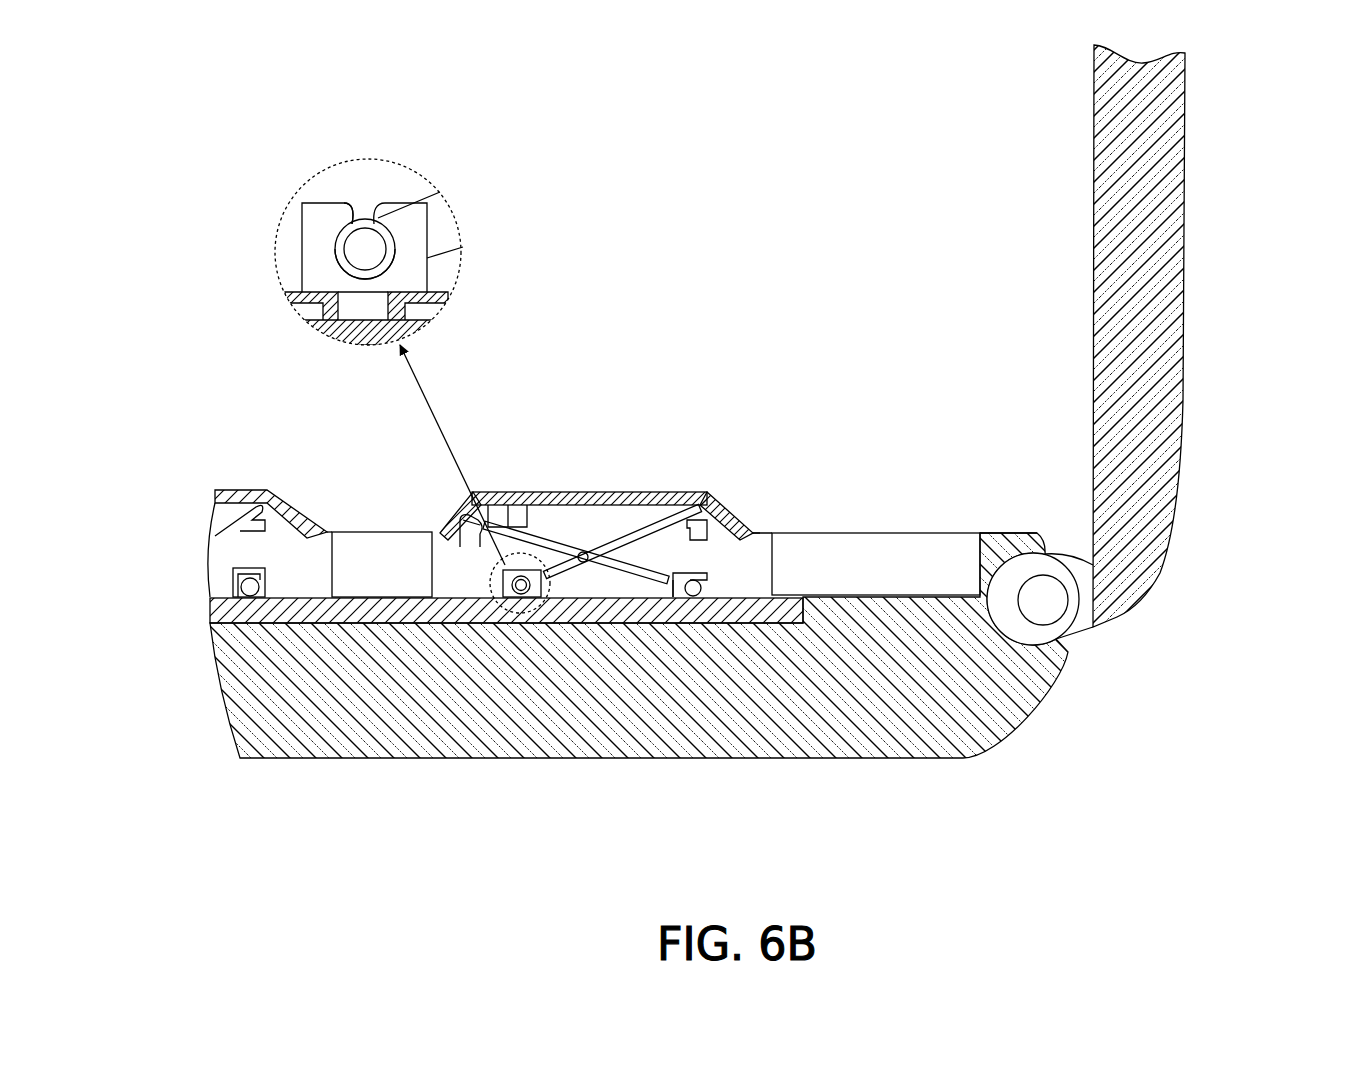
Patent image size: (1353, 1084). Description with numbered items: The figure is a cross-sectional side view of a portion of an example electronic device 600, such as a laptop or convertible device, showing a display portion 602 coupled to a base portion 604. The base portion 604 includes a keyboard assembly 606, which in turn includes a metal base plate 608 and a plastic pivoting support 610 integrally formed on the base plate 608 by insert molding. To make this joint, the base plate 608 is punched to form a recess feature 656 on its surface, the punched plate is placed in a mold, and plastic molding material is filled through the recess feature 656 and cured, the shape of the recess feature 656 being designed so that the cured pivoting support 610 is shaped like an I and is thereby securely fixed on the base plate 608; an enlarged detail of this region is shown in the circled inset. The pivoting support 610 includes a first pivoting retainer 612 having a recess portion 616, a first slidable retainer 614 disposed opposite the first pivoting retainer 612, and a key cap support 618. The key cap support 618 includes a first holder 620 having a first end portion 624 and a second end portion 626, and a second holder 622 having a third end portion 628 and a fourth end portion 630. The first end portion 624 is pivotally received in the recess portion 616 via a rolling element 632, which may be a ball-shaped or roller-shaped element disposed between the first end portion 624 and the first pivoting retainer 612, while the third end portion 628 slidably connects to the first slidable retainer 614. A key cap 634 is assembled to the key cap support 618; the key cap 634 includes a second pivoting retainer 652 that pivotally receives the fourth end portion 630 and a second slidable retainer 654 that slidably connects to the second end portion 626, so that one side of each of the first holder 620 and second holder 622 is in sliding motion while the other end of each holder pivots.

The electronic device 600 is at (907, 858).
The display portion 602 is at (1185, 382).
The base portion 604 is at (940, 758).
The keyboard assembly 606 is at (905, 533).
The base plate 608 is at (210, 612).
The pivoting support 610 is at (449, 531).
The first pivoting retainer 612 is at (543, 598).
The first slidable retainer 614 is at (683, 598).
The recess portion 616 is at (360, 198).
The key cap support 618 is at (573, 447).
The first holder 620 is at (633, 492).
The second holder 622 is at (495, 474).
The first end portion 624 is at (355, 250).
The second end portion 626 is at (707, 503).
The third end portion 628 is at (707, 600).
The fourth end portion 630 is at (480, 527).
The rolling element 632 is at (340, 267).
The key cap 634 is at (740, 528).
The second pivoting retainer 652 is at (492, 507).
The second slidable retainer 654 is at (750, 530).
The recess feature 656 is at (392, 282).